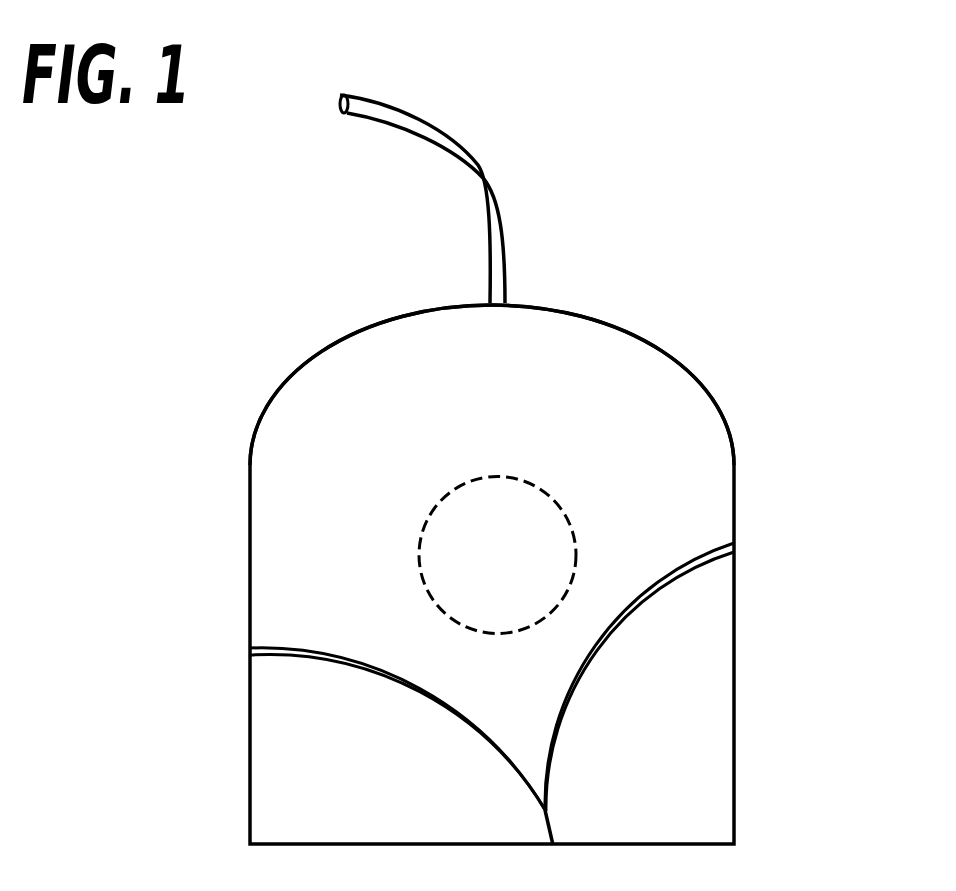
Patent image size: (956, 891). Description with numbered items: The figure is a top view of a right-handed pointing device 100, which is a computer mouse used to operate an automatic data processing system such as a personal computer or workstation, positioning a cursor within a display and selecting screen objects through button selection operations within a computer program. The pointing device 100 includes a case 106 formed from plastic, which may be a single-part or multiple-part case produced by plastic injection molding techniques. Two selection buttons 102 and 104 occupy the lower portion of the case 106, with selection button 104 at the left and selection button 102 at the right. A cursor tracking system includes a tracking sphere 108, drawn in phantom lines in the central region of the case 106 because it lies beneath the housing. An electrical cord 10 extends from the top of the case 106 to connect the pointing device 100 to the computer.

The tube 10 is at (481, 181).
The pointing device 100 is at (237, 470).
The selection button 102 is at (690, 705).
The selection button 104 is at (323, 748).
The case 106 is at (702, 380).
The tracking sphere 108 is at (565, 520).